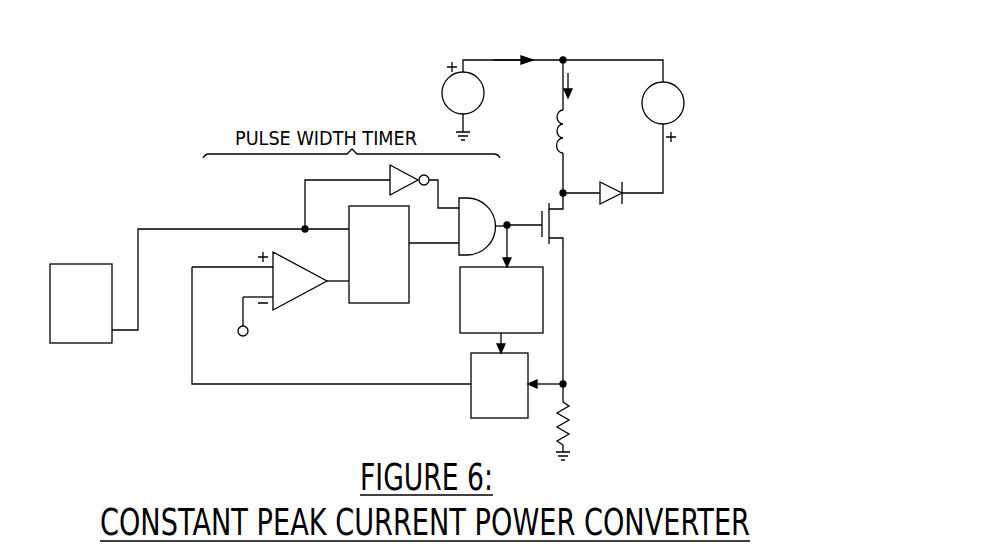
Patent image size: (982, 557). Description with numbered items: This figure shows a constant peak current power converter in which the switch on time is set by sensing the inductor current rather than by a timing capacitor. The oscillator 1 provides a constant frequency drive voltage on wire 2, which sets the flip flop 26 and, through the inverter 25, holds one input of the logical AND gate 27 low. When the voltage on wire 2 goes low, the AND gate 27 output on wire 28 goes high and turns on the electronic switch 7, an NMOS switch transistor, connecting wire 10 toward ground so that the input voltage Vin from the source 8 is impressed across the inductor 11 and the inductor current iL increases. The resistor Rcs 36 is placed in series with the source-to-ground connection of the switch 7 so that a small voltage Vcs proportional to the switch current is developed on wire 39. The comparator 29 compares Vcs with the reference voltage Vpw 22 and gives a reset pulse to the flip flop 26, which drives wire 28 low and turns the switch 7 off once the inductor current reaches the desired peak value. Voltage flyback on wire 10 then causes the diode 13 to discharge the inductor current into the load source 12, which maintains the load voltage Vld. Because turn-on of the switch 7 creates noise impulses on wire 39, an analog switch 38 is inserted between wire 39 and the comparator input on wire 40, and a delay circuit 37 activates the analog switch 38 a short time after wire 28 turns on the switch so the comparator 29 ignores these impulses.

The oscillator 1 is at (80, 264).
The wire 2 is at (205, 229).
The electronic switch 7 is at (566, 222).
The source 8 is at (485, 87).
The wire 10 is at (563, 173).
The inductor 11 is at (569, 139).
The source 12 is at (645, 105).
The diode 13 is at (627, 199).
The reference voltage Vpw 22 is at (241, 337).
The inverter 25 is at (390, 173).
The flip flop 26 is at (397, 306).
The logical AND gate 27 is at (478, 207).
The wire 28 is at (507, 222).
The comparator 29 is at (306, 291).
The resistor Rcs 36 is at (570, 416).
The delay circuit 37 is at (463, 336).
The analog switch 38 is at (471, 396).
The wire 39 is at (565, 354).
The wire 40 is at (347, 386).